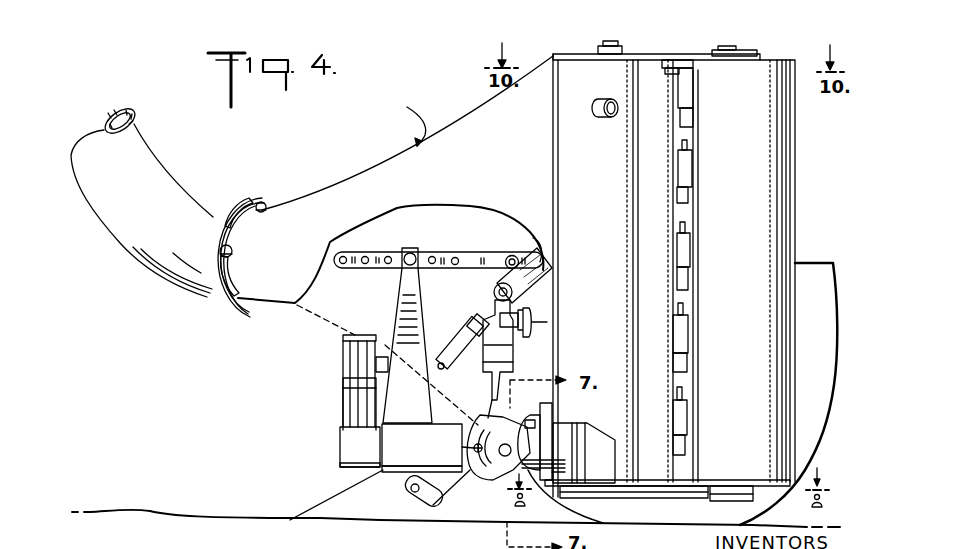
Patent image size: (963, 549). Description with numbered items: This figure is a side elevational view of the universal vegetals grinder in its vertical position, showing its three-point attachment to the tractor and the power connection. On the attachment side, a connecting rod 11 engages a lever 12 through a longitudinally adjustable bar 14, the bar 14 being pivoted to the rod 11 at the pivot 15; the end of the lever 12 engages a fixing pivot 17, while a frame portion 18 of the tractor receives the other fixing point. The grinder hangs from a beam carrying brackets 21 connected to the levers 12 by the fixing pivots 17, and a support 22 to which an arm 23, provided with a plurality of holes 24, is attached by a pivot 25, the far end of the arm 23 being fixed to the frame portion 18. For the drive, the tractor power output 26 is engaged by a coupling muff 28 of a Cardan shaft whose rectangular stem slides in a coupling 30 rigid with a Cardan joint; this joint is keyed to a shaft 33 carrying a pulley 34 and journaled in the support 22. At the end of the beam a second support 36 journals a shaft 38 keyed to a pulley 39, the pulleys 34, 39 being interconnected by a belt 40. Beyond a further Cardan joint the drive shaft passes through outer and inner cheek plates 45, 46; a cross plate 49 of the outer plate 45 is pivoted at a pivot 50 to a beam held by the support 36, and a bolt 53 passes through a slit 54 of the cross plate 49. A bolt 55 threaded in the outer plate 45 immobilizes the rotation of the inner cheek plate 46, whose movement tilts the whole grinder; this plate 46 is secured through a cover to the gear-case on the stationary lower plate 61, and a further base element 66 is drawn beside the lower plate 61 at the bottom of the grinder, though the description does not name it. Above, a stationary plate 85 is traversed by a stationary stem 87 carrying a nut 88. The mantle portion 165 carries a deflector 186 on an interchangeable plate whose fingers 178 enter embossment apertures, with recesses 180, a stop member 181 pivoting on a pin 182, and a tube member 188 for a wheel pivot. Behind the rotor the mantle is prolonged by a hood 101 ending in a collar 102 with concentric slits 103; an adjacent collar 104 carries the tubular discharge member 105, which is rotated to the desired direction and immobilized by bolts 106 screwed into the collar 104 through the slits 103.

The connecting rod 11 is at (533, 270).
The lever 12 is at (470, 462).
The longitudinally adjustable bar 14 is at (513, 353).
The pivot 15 is at (494, 290).
The fixing pivot 17 is at (438, 498).
The frame portion 18 is at (514, 255).
The bracket 21 is at (393, 460).
The support 22 is at (407, 335).
The arm 23 is at (472, 255).
The hole 24 is at (455, 257).
The pivot 25 is at (412, 254).
The power output 26 is at (533, 320).
The coupling muff 28 is at (505, 318).
The coupling 30 is at (462, 338).
The shaft 33 is at (382, 356).
The pulley 34 is at (343, 370).
The support 36 is at (388, 474).
The shaft 38 is at (343, 446).
The pulley 39 is at (343, 436).
The belt 40 is at (343, 392).
The outer cheek plate 45 is at (548, 440).
The inner cheek plate 46 is at (560, 435).
The cross plate 49 is at (522, 433).
The pivot 50 is at (505, 458).
The bolt 53 is at (474, 448).
The slit 54 is at (484, 468).
The bolt 55 is at (565, 460).
The stationary lower plate 61 is at (712, 492).
The base plate 66 is at (636, 493).
The stationary plate 85 is at (572, 30).
The stationary stem 87 is at (612, 41).
The nut 88 is at (623, 52).
The hood 101 is at (290, 205).
The collar 102 is at (252, 300).
The concentric slit 103 is at (238, 290).
The collar 104 is at (212, 240).
The tubular conduit or discharge member 105 is at (150, 150).
The bolt 106 is at (234, 251).
The mantle portion 165 is at (650, 181).
The finger 178 is at (688, 178).
The recess 180 is at (688, 280).
The stop member 181 is at (690, 60).
The pin 182 is at (666, 73).
The deflector 186 is at (782, 145).
The tube member 188 is at (600, 118).